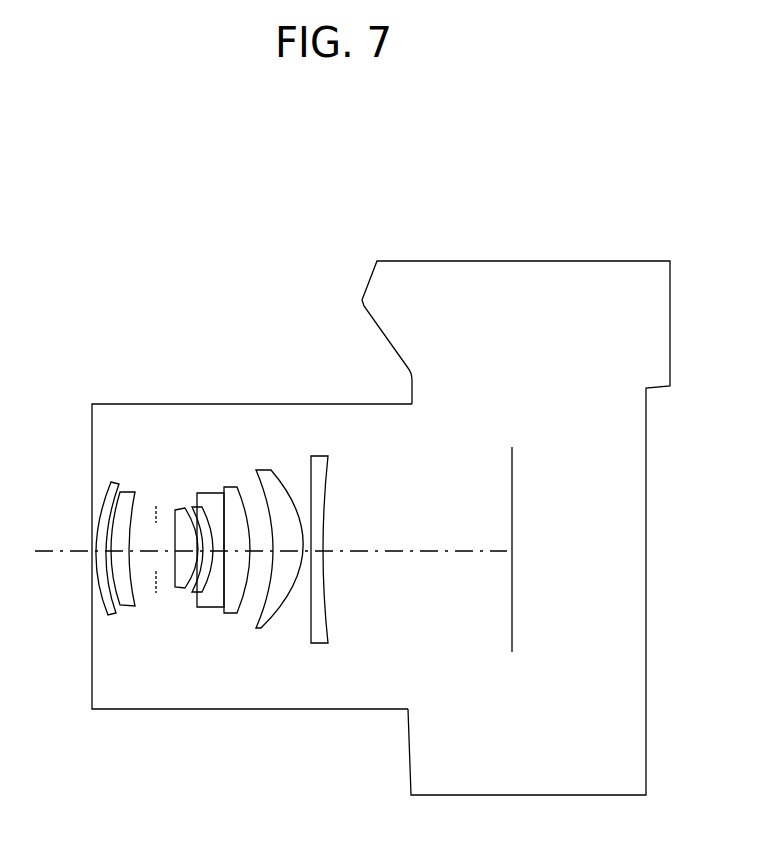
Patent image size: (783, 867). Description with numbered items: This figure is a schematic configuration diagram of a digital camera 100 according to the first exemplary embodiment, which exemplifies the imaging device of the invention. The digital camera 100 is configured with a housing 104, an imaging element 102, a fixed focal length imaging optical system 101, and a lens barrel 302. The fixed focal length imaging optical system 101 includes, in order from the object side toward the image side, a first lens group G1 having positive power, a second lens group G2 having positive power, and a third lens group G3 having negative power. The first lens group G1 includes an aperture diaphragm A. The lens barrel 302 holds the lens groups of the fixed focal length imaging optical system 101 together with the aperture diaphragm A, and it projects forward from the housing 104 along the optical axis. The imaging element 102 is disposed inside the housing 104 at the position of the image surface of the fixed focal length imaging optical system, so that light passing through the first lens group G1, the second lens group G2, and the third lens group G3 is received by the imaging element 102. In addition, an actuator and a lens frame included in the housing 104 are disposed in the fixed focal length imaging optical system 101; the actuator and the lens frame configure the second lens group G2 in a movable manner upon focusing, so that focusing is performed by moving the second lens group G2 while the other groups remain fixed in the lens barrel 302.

The digital camera 100 is at (92, 215).
The fixed focal length imaging optical system 101 is at (216, 590).
The imaging element 102 is at (513, 608).
The housing 104 is at (510, 260).
The lens barrel 302 is at (205, 404).
The aperture diaphragm A is at (155, 500).
The first lens group G1 is at (173, 562).
The second lens group G2 is at (298, 648).
The third lens group G3 is at (311, 621).